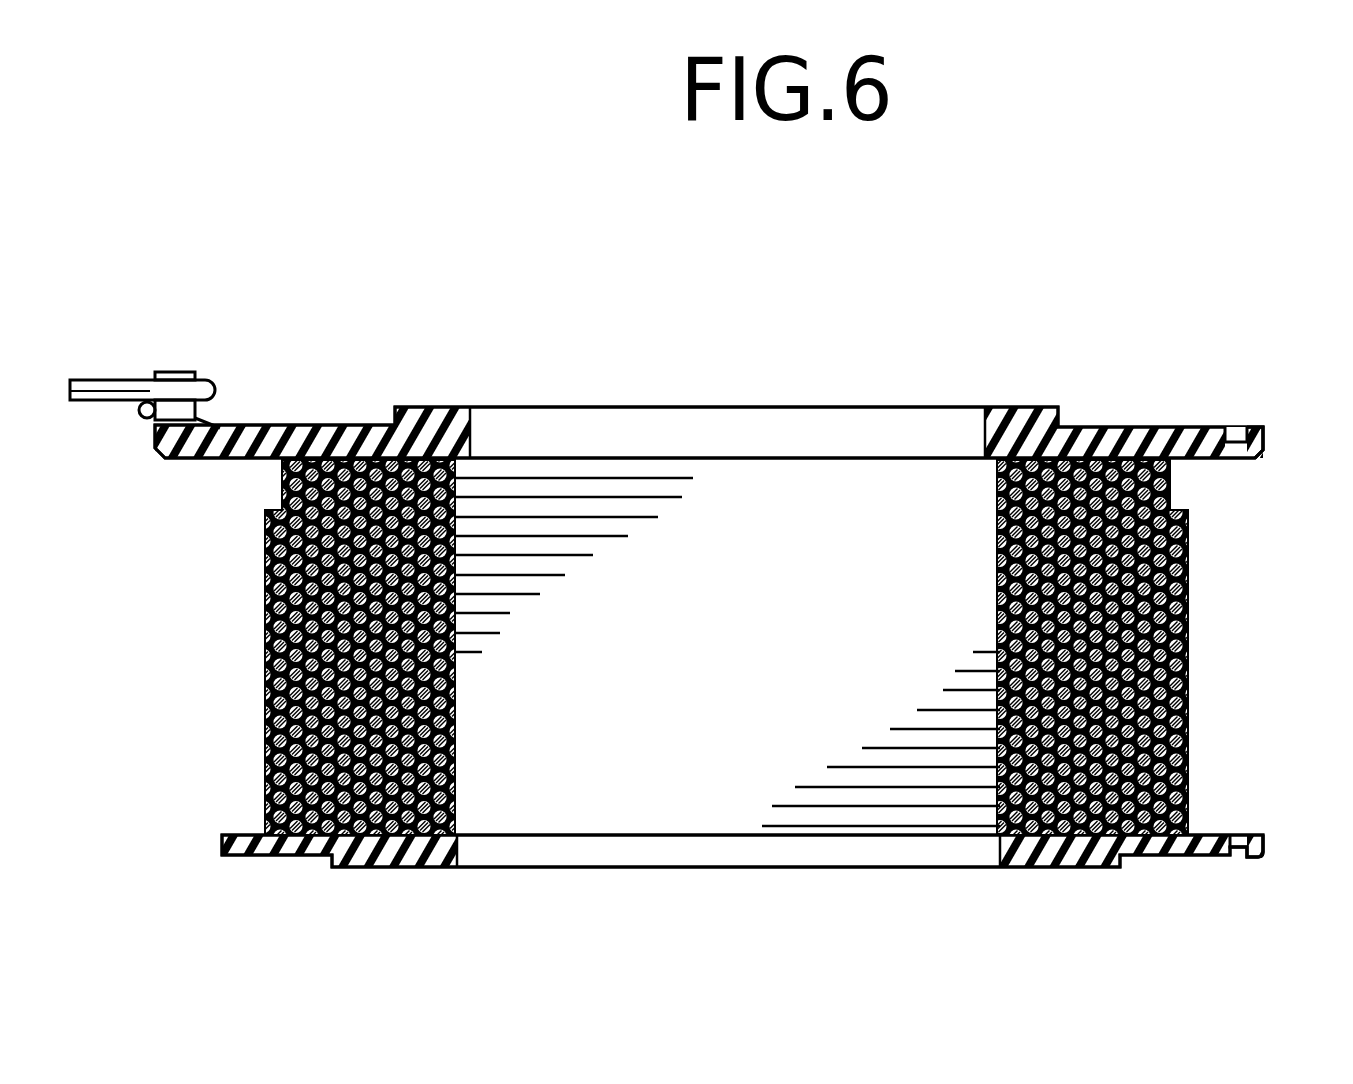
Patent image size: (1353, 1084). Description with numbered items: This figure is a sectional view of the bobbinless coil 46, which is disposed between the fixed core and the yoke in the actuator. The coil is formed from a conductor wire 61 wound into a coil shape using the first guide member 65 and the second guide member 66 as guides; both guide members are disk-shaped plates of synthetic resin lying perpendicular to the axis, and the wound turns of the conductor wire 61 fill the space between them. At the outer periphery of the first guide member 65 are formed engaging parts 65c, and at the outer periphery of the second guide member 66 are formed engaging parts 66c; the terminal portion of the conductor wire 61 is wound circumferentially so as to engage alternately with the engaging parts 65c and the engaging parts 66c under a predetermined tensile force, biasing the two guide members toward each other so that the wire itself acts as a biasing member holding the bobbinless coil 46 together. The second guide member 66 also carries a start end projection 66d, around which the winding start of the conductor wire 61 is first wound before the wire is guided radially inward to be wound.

The bobbinless coil 46 is at (875, 375).
The conductor wire 61 is at (270, 680).
The first guide member 65 is at (823, 868).
The engaging parts 65c is at (1236, 852).
The second guide member 66 is at (675, 408).
The engaging parts 66c is at (1240, 438).
The start end projection 66d is at (180, 378).